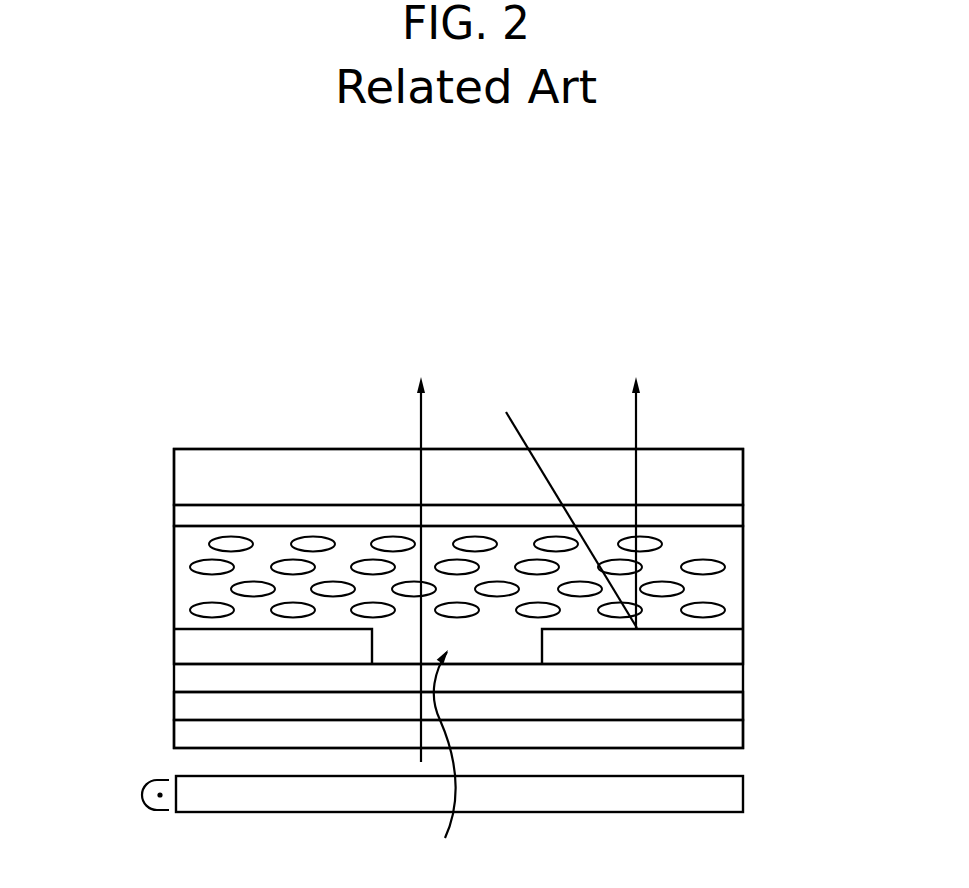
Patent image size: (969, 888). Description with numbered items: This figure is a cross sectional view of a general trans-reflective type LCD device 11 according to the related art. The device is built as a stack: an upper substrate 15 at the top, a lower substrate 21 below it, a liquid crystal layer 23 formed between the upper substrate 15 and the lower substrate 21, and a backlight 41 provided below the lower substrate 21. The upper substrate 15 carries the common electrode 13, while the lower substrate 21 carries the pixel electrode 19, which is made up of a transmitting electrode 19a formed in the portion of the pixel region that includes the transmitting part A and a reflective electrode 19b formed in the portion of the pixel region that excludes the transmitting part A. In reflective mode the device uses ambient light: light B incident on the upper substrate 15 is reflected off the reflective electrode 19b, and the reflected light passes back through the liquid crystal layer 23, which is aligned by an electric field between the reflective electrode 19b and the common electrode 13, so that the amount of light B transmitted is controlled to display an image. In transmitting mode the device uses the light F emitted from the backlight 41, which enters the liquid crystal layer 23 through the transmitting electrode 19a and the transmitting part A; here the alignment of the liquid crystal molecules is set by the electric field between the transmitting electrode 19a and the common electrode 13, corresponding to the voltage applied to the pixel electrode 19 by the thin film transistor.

The trans-reflective type LCD device 11 is at (122, 552).
The common electrode 13 is at (740, 512).
The upper substrate 15 is at (740, 477).
The pixel electrode 19 is at (535, 674).
The transmitting electrode 19a is at (740, 705).
The reflective electrode 19b is at (740, 645).
The lower substrate 21 is at (740, 737).
The liquid crystal layer 23 is at (740, 561).
The backlight 41 is at (740, 791).
The light emitted from the backlight F is at (420, 418).
The ambient light B is at (513, 423).
The transmitting part A is at (443, 763).